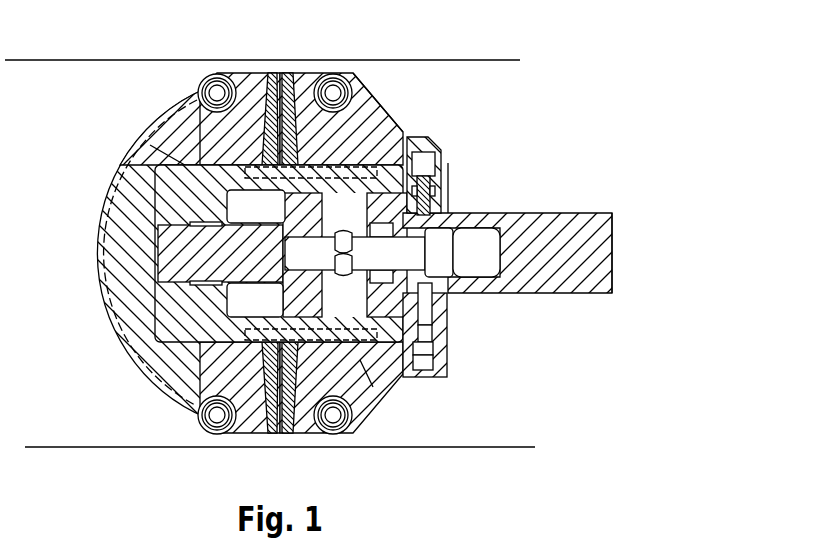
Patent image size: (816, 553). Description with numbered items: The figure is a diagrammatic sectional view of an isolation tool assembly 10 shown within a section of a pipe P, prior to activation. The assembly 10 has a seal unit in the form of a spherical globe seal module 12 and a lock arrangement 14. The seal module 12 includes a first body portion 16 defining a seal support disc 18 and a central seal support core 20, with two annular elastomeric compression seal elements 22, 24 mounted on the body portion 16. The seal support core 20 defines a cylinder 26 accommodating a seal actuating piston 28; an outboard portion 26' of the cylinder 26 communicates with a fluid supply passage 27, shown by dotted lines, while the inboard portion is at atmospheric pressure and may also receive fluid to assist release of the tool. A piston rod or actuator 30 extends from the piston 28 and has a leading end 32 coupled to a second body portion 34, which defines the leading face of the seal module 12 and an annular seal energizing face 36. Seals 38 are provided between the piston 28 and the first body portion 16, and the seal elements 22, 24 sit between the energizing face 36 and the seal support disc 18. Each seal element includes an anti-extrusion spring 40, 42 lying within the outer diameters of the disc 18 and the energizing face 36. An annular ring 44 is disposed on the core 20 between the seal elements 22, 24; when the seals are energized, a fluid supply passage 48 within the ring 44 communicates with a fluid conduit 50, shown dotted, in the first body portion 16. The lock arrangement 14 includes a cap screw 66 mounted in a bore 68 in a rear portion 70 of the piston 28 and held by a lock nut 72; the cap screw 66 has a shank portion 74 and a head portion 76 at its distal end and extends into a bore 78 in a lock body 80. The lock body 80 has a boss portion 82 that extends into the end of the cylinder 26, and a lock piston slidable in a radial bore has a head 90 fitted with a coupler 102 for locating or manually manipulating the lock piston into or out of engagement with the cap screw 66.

The isolation tool assembly 10 is at (548, 79).
The spherical globe seal module 12 is at (142, 415).
The lock arrangement 14 is at (462, 320).
The first body portion 16 is at (402, 130).
The seal support disc 18 is at (362, 100).
The central seal support core 20 is at (195, 185).
The annular elastomeric compression seal element 22 is at (241, 82).
The annular elastomeric compression seal element 24 is at (310, 88).
The cylinder 26 is at (321, 388).
The outboard portion of the cylinder 26' is at (143, 137).
The fluid supply passage 27 is at (340, 372).
The seal actuating piston 28 is at (268, 345).
The piston rod or actuator 30 is at (158, 268).
The leading end 32 is at (190, 260).
The second body portion 34 is at (120, 205).
The annular seal energizing face 36 is at (210, 125).
The seals 38 is at (383, 180).
The anti-extrusion spring 40 is at (213, 90).
The anti-extrusion spring 42 is at (335, 88).
The annular ring 44 is at (270, 80).
The fluid supply passage 48 is at (288, 80).
The fluid conduit 50 is at (383, 122).
The cap screw 66 is at (440, 240).
The bore 68 is at (308, 234).
The rear portion 70 is at (424, 178).
The lock nut 72 is at (433, 360).
The shank portion 74 is at (410, 253).
The head portion 76 is at (442, 256).
The bore 78 is at (500, 216).
The lock body 80 is at (600, 245).
The boss portion 82 is at (433, 338).
The head 90 is at (432, 200).
The coupler 102 is at (436, 186).
The pipe P is at (478, 60).